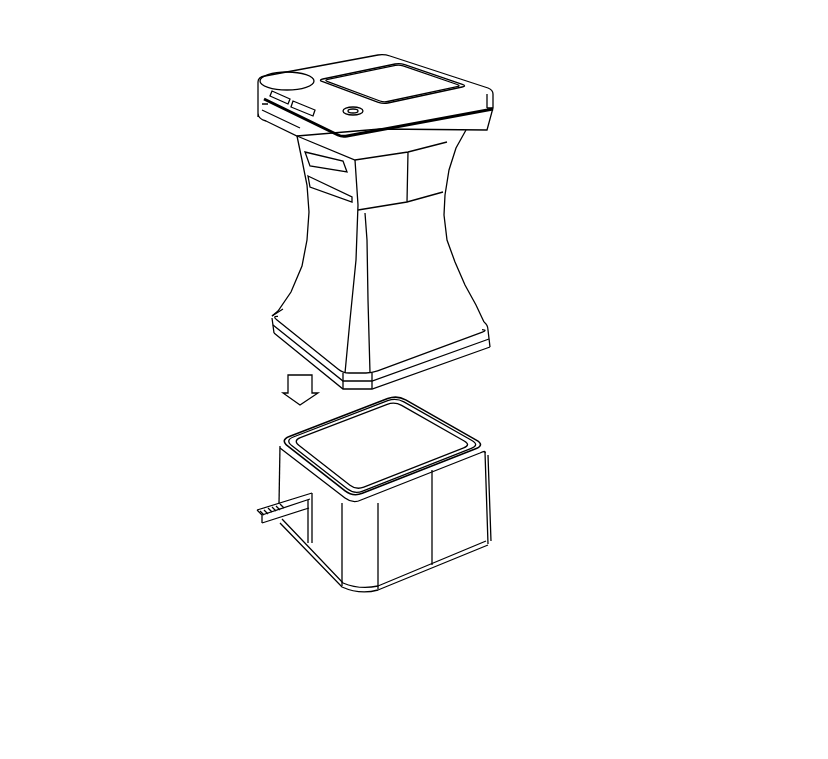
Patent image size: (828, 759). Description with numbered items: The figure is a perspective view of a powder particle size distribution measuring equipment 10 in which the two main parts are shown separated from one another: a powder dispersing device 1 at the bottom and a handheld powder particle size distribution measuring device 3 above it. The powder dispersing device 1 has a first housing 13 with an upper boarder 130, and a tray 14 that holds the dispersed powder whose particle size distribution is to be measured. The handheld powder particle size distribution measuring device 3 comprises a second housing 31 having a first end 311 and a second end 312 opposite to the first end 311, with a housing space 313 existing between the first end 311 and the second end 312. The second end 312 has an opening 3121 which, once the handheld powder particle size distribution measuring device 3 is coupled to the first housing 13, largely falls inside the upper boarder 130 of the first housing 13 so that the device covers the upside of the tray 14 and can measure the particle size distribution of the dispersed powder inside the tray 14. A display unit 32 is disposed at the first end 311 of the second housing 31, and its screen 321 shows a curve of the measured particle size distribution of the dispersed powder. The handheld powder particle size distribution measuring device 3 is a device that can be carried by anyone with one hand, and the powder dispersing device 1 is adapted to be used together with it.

The powder particle size distribution measuring equipment 10 is at (122, 79).
The powder dispersing device 1 is at (488, 483).
The first housing 13 is at (490, 513).
The tray 14 is at (443, 450).
The upper boarder 130 is at (282, 436).
The handheld powder particle size distribution measuring device 3 is at (446, 218).
The second housing 31 is at (300, 262).
The first end 311 is at (263, 118).
The second end 312 is at (280, 342).
The opening 3121 is at (470, 367).
The housing space 313 is at (397, 275).
The display unit 32 is at (495, 99).
The screen 321 is at (448, 80).